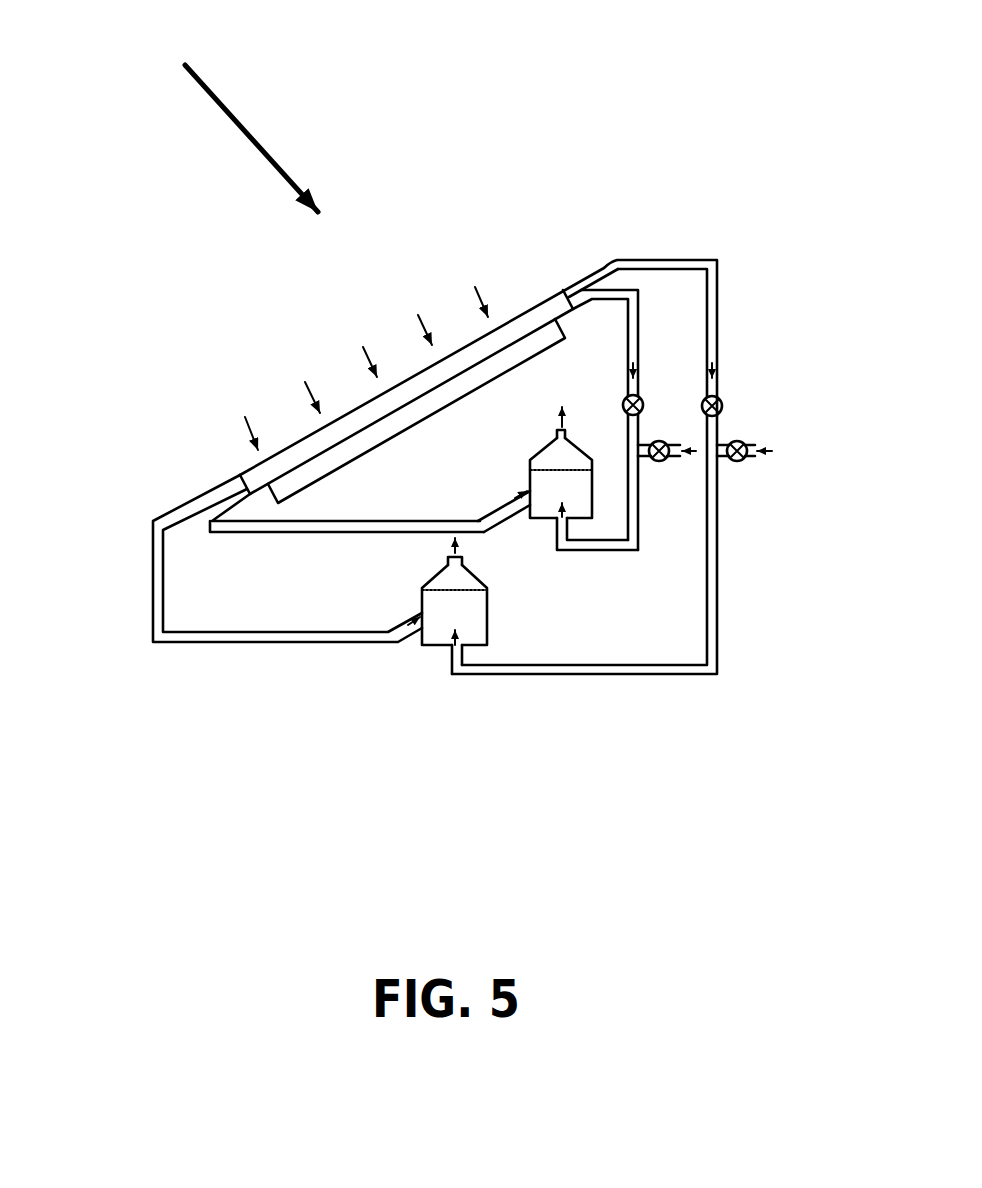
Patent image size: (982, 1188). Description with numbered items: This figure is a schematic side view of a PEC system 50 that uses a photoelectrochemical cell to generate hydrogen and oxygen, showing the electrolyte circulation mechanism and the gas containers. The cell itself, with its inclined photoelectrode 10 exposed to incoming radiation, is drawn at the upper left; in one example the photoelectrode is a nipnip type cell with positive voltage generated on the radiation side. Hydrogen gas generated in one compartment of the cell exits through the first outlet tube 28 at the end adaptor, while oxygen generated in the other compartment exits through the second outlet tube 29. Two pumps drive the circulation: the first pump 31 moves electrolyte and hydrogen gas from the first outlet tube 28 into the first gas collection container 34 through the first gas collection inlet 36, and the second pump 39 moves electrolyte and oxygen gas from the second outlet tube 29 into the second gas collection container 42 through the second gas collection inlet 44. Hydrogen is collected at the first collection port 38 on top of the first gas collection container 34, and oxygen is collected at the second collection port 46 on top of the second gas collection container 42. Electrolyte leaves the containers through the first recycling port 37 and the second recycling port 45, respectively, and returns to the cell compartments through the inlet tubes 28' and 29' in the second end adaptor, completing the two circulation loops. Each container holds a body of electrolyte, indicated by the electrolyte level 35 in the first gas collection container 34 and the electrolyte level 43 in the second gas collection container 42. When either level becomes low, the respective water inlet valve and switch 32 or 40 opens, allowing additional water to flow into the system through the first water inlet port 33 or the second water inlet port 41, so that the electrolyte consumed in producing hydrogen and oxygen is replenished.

The PEC system 50 is at (220, 109).
The solar absorber panel 10 is at (305, 400).
The first outlet tube 28 is at (585, 369).
The inlet tube 28' is at (287, 466).
The second outlet tube 29 is at (478, 427).
The inlet tube 29' is at (221, 558).
The first pump 31 is at (641, 400).
The water inlet valve and switch 32 is at (660, 458).
The first water inlet port 33 is at (690, 450).
The first gas collection container 34 is at (587, 487).
The electrolyte level 35 is at (562, 472).
The first gas collection inlet 36 is at (557, 548).
The first recycling port 37 is at (520, 488).
The first collection port 38 is at (556, 433).
The second pump 39 is at (720, 398).
The water inlet valve and switch 40 is at (748, 457).
The second water inlet port 41 is at (788, 445).
The second gas collection container 42 is at (475, 615).
The electrolyte level 43 is at (455, 645).
The second gas collection inlet 44 is at (450, 655).
The second recycling port 45 is at (412, 622).
The second collection port 46 is at (445, 567).